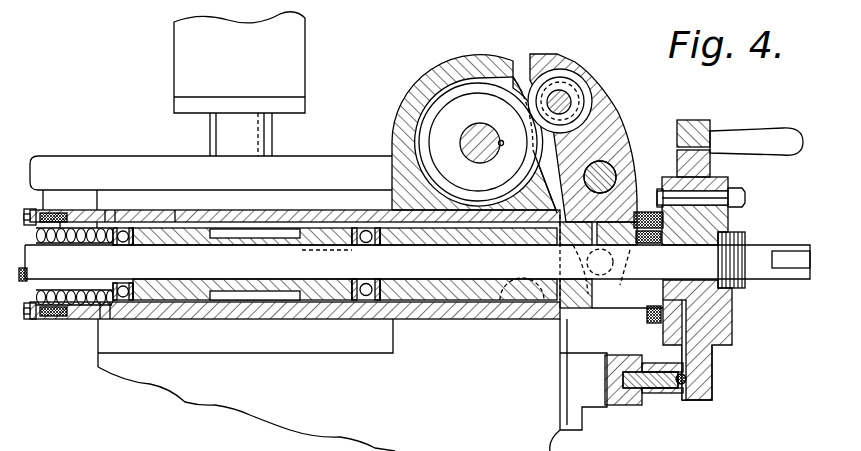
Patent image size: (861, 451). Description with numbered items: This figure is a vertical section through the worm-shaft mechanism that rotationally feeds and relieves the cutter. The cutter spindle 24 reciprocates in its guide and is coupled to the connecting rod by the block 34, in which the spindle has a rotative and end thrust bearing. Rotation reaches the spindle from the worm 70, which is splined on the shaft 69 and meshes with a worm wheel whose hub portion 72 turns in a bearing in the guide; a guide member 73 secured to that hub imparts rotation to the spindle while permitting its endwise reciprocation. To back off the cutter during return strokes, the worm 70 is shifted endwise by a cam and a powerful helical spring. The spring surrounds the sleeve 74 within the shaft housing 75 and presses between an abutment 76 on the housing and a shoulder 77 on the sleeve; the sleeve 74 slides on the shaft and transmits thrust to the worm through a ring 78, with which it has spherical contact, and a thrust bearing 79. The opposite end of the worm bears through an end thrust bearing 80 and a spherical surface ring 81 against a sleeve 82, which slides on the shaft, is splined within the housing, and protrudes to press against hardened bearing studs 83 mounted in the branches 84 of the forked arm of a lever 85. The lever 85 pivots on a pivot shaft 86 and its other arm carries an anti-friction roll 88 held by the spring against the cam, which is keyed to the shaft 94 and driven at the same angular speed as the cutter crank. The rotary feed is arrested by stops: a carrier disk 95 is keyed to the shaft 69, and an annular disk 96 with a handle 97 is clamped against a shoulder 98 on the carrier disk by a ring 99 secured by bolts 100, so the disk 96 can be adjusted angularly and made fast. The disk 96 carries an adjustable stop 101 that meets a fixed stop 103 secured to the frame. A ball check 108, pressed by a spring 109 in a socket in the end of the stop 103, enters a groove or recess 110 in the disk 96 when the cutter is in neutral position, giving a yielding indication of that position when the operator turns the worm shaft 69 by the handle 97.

The block 34 is at (190, 50).
The cutter spindle 24 is at (235, 136).
The shaft housing 75 is at (145, 214).
The guide member 73 is at (80, 214).
The shoulder 77 is at (110, 214).
The abutment 76 is at (33, 305).
The sleeve 74 is at (97, 243).
The shaft 69 is at (385, 265).
The worm 70 is at (255, 231).
The ring 78 is at (114, 247).
The thrust bearing 79 is at (133, 240).
The end thrust bearing 80 is at (363, 227).
The spherical surface ring 81 is at (376, 227).
The sleeve 82 is at (447, 234).
The hub portion 72 is at (453, 112).
The shaft 94 is at (480, 152).
The lever 85 is at (600, 125).
The anti-friction roll 88 is at (557, 84).
The pivot shaft 86 is at (610, 164).
The annular disk 96 is at (697, 121).
The handle 97 is at (765, 136).
The bolts 100 is at (708, 200).
The disk 95 is at (722, 306).
The shoulder 98 is at (713, 343).
The groove 110 is at (684, 400).
The spring 109 is at (641, 387).
The fixed stop 103 is at (659, 393).
The ball check 108 is at (689, 378).
The adjustable stop 101 is at (648, 322).
The ring 99 is at (676, 324).
The branches 84 is at (603, 286).
The bearing studs 83 is at (607, 270).